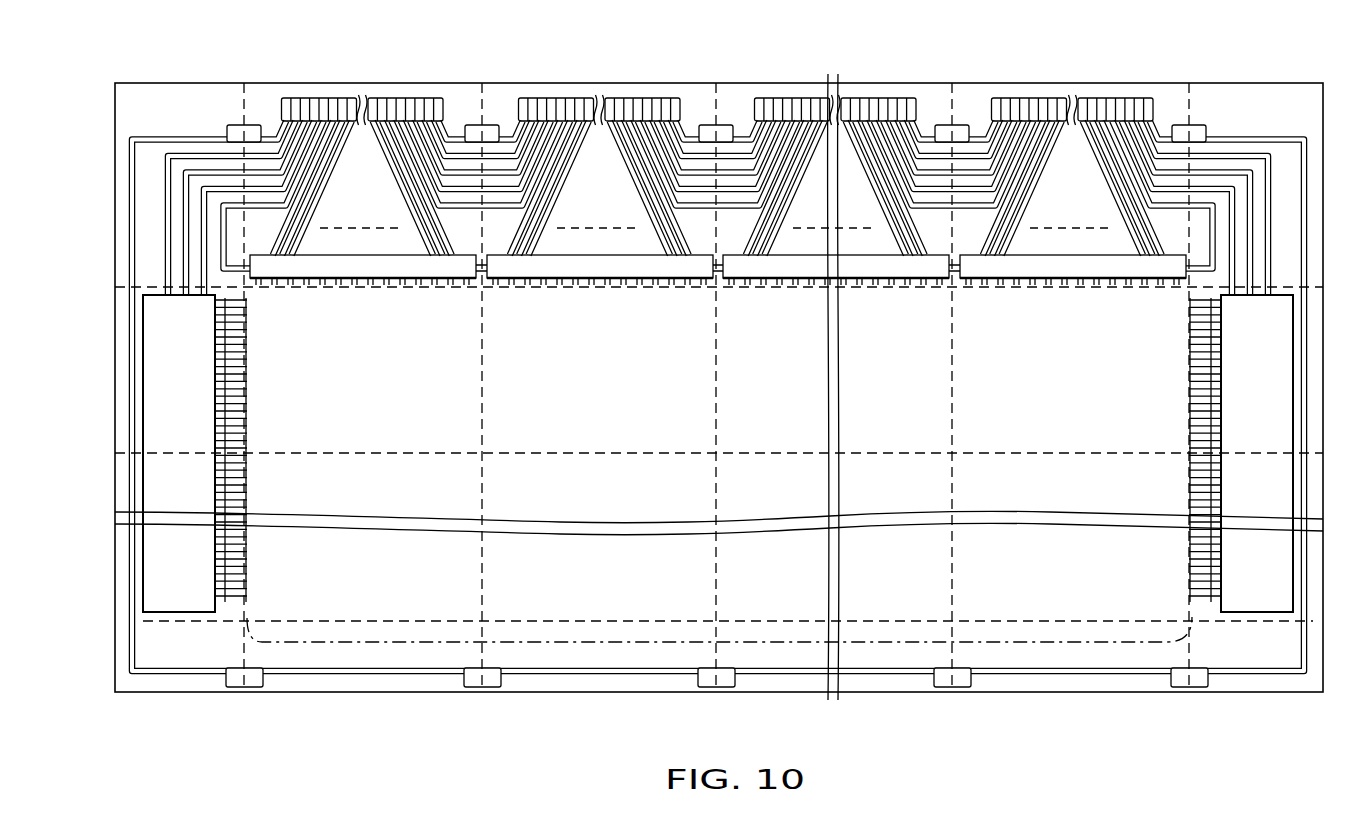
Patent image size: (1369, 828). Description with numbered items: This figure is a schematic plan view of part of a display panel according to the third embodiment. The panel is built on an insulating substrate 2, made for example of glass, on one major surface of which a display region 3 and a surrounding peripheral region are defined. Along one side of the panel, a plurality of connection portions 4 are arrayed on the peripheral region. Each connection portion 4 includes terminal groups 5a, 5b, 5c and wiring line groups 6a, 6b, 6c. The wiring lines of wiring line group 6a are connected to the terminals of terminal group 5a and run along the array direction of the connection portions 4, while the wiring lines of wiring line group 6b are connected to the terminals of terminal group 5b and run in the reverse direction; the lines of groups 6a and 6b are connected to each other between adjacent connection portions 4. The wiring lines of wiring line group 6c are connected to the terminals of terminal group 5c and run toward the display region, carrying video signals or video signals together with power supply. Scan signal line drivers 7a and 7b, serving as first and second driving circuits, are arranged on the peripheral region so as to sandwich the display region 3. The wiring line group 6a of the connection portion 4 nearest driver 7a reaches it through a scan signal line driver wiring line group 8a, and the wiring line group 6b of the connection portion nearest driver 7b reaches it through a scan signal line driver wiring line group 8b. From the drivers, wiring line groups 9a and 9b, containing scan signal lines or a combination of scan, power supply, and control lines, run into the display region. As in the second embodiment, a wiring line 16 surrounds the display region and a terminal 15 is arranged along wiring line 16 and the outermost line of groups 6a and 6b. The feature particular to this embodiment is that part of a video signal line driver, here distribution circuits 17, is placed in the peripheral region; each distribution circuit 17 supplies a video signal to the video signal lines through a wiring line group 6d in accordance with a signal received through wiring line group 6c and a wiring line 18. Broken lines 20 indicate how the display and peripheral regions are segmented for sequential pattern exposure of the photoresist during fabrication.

The insulating substrate 2 is at (1257, 685).
The display region 3 is at (1030, 641).
The connection portion 4 is at (615, 62).
The terminal group 5a is at (572, 97).
The terminal group 5b is at (678, 97).
The terminal group 5c is at (627, 97).
The wiring line group 6a is at (503, 218).
The wiring line group 6b is at (692, 218).
The wiring line group 6c is at (512, 238).
The wiring line group 6d is at (712, 297).
The scan signal line driver 7a is at (153, 376).
The scan signal line driver 7b is at (1278, 375).
The scan signal line driver wiring line group 8a is at (181, 253).
The scan signal line driver wiring line group 8b is at (1255, 253).
The wiring line group 9a is at (257, 598).
The wiring line group 9b is at (1179, 598).
The terminal 15 is at (487, 692).
The wiring line 16 is at (130, 153).
The distribution circuit 17 is at (557, 267).
The wiring line 18 is at (221, 222).
The broken line 20 is at (293, 713).